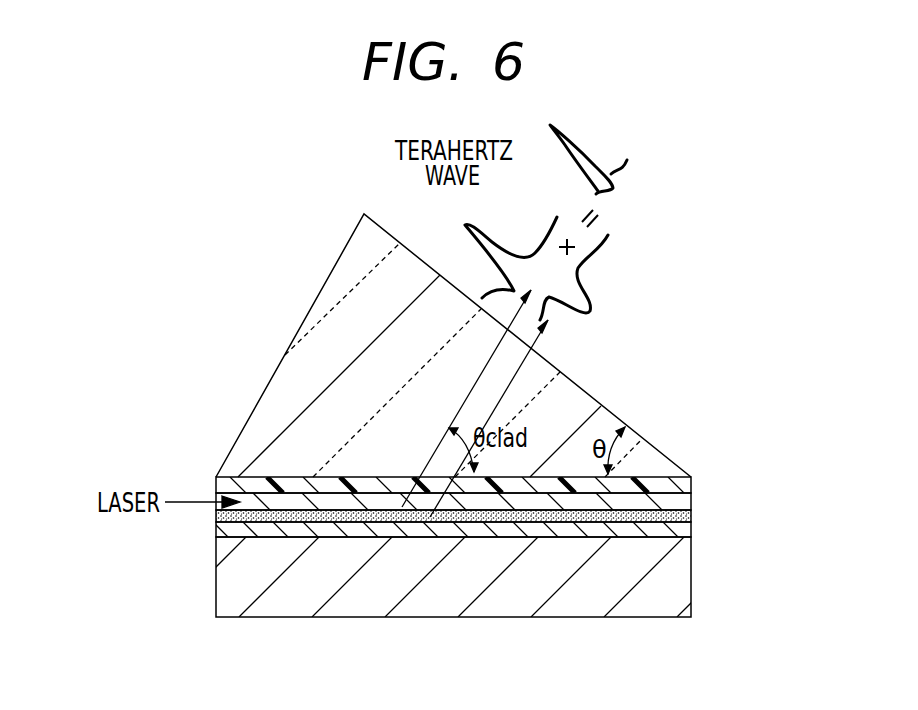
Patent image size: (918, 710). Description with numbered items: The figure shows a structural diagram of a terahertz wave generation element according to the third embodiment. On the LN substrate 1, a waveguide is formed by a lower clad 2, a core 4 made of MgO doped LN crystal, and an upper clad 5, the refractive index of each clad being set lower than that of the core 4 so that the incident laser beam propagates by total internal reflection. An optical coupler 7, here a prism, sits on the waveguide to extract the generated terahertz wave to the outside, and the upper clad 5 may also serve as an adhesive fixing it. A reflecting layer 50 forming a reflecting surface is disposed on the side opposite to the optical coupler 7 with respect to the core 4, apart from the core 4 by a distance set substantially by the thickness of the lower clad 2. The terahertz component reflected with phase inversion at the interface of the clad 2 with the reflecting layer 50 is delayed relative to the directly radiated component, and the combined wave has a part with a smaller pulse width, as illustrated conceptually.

The LN substrate 1 is at (683, 575).
The lower clad 2 is at (680, 518).
The core 4 is at (680, 502).
The upper clad 5 is at (680, 486).
The optical coupler 7 is at (570, 392).
The reflecting layer 50 is at (222, 528).